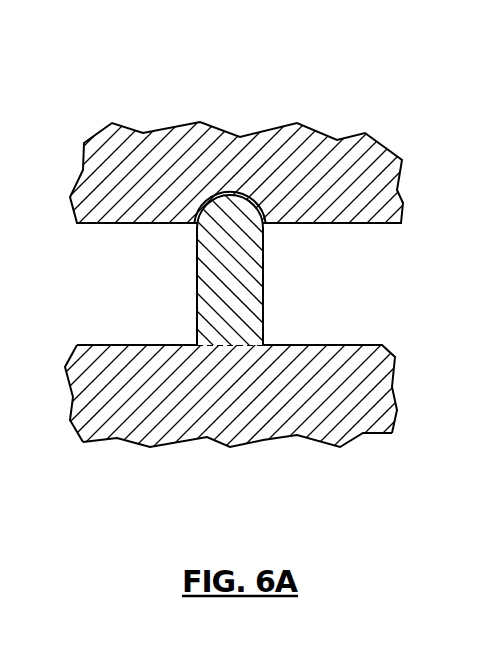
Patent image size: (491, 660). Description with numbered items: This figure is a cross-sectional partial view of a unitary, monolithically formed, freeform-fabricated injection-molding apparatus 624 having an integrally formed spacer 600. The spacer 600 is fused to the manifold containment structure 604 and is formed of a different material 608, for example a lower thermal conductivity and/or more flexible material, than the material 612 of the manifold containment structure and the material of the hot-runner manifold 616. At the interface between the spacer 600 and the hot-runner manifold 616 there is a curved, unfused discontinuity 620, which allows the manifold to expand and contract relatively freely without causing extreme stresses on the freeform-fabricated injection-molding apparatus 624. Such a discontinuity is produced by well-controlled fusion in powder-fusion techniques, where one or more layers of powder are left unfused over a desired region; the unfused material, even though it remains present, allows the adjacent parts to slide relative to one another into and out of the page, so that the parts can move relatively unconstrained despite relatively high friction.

The spacer 600 is at (228, 270).
The manifold containment structure 604 is at (245, 452).
The different material 608 is at (211, 296).
The material of the manifold containment structure 612 is at (245, 299).
The hot-runner manifold 616 is at (385, 136).
The curved, unfused discontinuity 620 is at (205, 196).
The freeform-fabricated injection-molding apparatus 624 is at (110, 456).